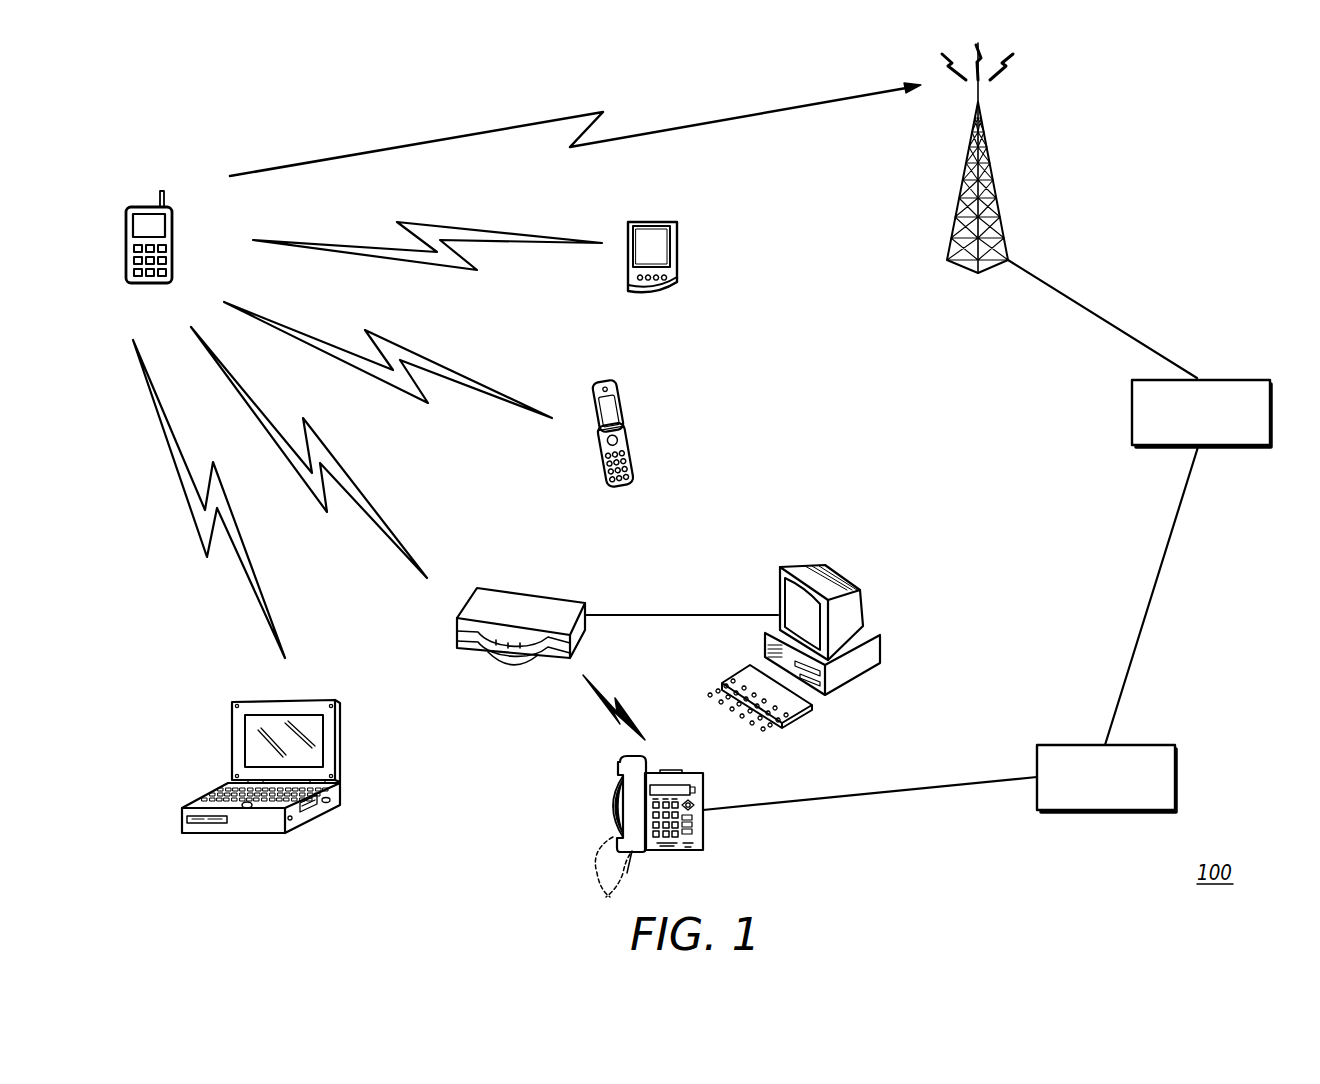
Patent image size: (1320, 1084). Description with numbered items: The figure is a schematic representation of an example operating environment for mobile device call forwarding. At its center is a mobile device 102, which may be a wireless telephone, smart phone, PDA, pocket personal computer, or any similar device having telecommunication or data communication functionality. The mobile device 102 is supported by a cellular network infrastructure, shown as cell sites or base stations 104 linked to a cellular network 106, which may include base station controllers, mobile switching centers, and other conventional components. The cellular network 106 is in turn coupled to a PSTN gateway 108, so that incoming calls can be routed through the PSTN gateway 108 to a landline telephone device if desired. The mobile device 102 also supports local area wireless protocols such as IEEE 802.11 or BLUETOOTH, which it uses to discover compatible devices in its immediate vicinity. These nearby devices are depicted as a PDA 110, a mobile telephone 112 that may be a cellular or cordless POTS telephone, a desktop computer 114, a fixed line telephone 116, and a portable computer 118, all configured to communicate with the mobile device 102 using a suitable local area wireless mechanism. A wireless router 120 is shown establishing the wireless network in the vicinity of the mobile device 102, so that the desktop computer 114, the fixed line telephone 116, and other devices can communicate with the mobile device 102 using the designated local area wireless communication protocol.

The mobile device 102 is at (140, 207).
The base stations 104 is at (995, 190).
The cellular network 106 is at (1252, 378).
The PSTN gateway 108 is at (1157, 743).
The PDA 110 is at (658, 220).
The mobile telephone 112 is at (607, 383).
The desktop computer 114 is at (872, 625).
The fixed line telephone 116 is at (695, 772).
The portable computer 118 is at (340, 743).
The wireless router 120 is at (568, 597).